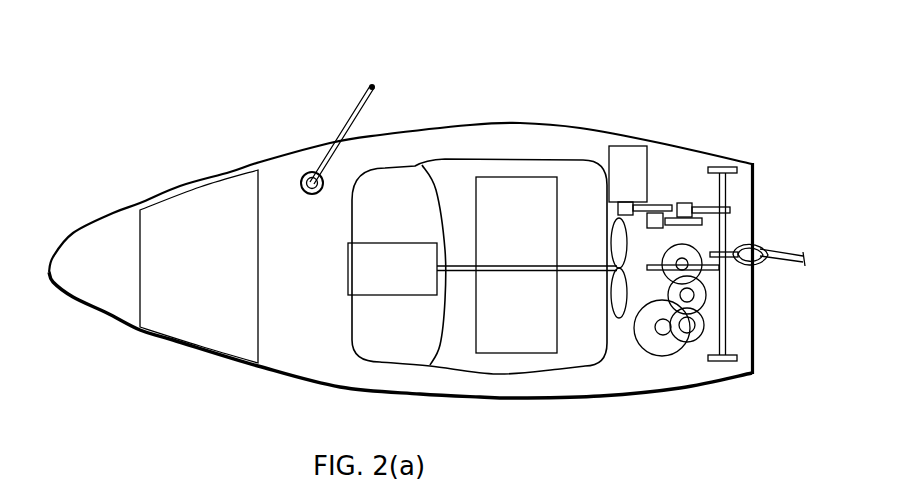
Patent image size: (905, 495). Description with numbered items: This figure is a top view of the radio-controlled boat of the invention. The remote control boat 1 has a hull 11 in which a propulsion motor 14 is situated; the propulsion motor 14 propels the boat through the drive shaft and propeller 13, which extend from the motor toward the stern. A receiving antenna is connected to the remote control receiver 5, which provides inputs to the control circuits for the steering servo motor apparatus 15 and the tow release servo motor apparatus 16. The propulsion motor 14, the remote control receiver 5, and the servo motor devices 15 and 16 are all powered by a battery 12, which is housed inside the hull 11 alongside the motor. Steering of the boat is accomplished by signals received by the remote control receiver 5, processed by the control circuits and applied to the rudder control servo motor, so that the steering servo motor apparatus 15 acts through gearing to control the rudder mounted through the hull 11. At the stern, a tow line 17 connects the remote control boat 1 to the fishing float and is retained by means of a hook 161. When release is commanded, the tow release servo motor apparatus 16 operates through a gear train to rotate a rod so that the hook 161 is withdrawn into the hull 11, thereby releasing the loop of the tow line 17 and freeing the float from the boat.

The remote control boat 1 is at (419, 128).
The hull 11 is at (115, 213).
The remote control receiver 5 is at (203, 185).
The battery 12 is at (505, 177).
The drive shaft and propeller 13 is at (513, 273).
The propulsion motor 14 is at (387, 243).
The steering servo motor apparatus 15 is at (697, 250).
The tow release servo motor apparatus 16 is at (622, 146).
The tow line 17 is at (793, 253).
The hook 161 is at (733, 262).